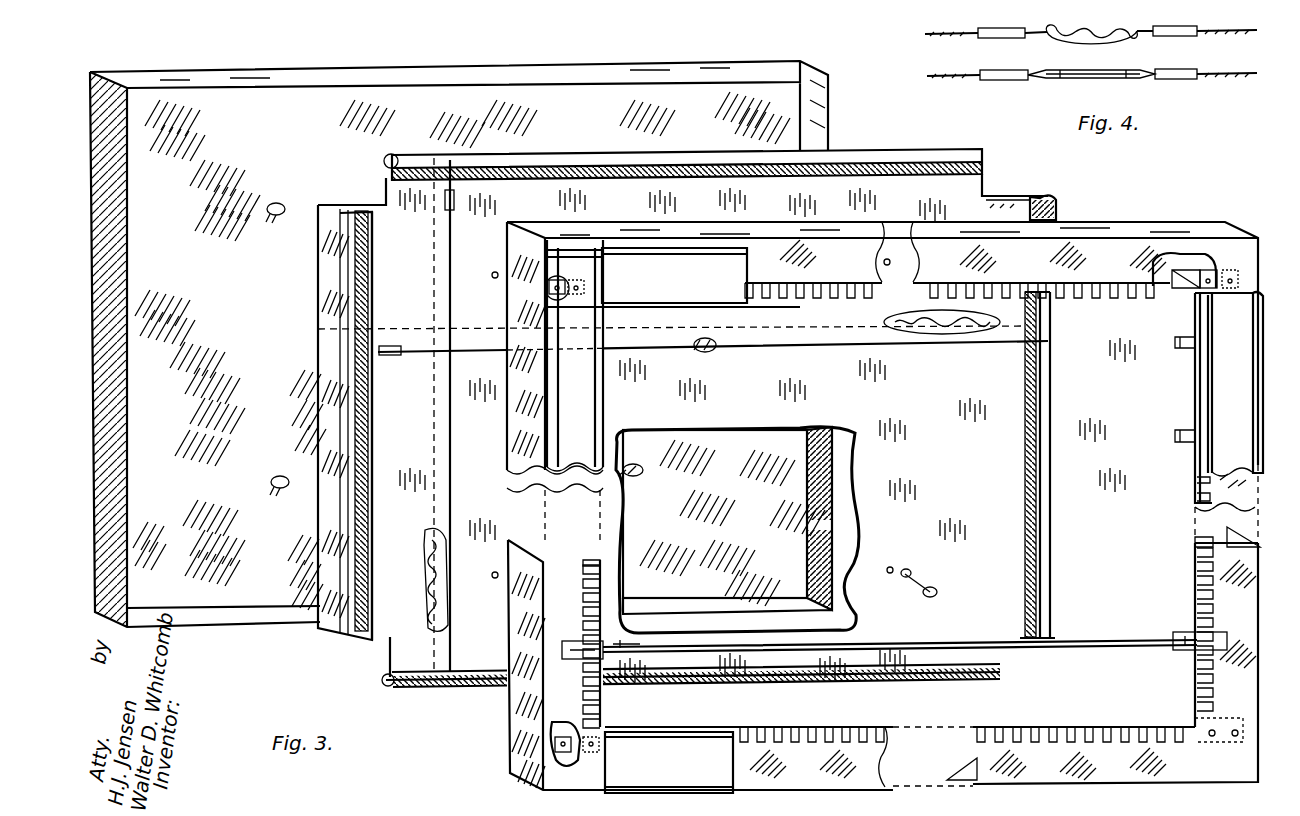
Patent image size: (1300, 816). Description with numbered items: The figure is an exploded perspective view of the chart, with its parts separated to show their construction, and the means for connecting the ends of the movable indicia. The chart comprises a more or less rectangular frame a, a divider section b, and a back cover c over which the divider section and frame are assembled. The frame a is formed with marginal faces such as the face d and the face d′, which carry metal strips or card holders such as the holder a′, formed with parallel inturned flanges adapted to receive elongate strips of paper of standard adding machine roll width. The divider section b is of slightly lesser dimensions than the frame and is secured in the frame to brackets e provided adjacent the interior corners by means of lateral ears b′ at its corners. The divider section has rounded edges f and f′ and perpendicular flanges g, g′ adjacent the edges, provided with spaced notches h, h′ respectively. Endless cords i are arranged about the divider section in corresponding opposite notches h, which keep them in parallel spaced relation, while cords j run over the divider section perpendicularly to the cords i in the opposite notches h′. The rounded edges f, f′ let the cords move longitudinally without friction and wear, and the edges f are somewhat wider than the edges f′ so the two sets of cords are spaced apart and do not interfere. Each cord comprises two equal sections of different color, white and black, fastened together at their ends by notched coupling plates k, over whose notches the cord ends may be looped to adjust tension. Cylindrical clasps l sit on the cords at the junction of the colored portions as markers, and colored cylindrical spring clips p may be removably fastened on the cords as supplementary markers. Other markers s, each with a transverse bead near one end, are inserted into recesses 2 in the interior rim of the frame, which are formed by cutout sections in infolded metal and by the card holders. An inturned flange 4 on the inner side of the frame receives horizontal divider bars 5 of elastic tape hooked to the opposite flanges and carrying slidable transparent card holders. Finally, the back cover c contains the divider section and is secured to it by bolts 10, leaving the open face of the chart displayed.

In FIG. 3, the frame a is at (1158, 226).
In FIG. 3, the card holder a′ is at (545, 415).
In FIG. 3, the divider section b is at (385, 618).
In FIG. 3, the lateral ear b′ is at (348, 206).
In FIG. 3, the back cover c is at (250, 590).
In FIG. 3, the marginal face d is at (588, 480).
In FIG. 3, the marginal face d′ is at (806, 282).
In FIG. 3, the bracket e is at (562, 276).
In FIG. 3, the rounded edge f is at (1050, 198).
In FIG. 3, the rounded edge f′ is at (415, 156).
In FIG. 3, the perpendicular flange g is at (372, 238).
In FIG. 3, the perpendicular flange g′ is at (572, 166).
In FIG. 3, the notch h is at (369, 262).
In FIG. 3, the notch h′ is at (684, 168).
In FIG. 4, the endless cord i is at (916, 40).
In FIG. 3, the endless cord i is at (404, 356).
In FIG. 3, the cord j is at (452, 386).
In FIG. 4, the notched coupling plate k is at (1102, 46).
In FIG. 3, the notched coupling plate k is at (955, 332).
In FIG. 3, the cylindrical clasp l is at (454, 205).
In FIG. 3, the cylindrical spring clip p is at (703, 354).
In FIG. 3, the marker s is at (1174, 344).
In FIG. 3, the recess 2 is at (1108, 266).
In FIG. 3, the inturned flange 4 is at (912, 260).
In FIG. 3, the horizontal divider bar 5 is at (1120, 640).
In FIG. 3, the bolt 10 is at (916, 576).